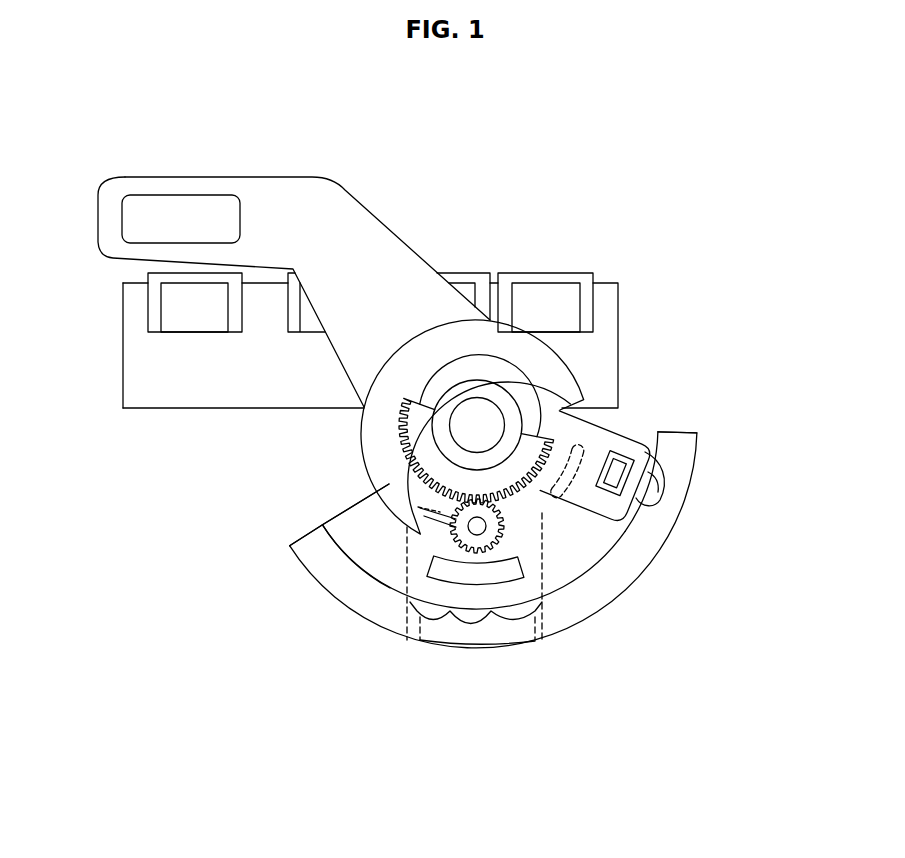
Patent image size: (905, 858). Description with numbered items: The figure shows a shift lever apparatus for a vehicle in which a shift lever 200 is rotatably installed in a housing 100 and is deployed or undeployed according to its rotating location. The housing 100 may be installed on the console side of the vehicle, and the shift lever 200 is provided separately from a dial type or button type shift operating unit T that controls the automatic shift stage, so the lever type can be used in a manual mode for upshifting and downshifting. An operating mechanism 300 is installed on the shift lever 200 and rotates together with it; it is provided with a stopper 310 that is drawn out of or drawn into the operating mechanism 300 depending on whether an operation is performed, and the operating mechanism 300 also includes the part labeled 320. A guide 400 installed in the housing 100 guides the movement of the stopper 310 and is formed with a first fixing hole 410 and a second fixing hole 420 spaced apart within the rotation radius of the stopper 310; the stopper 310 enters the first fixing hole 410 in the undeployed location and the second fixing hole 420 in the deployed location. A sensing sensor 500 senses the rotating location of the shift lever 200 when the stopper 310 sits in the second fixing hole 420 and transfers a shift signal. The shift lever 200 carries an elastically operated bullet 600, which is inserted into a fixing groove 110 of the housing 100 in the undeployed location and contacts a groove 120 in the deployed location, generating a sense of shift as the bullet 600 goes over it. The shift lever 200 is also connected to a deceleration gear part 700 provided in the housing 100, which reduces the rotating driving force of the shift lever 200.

The housing 100 is at (632, 592).
The fixing groove 110 is at (660, 437).
The groove 120 is at (500, 613).
The shift lever 200 is at (287, 168).
The operating mechanism 300 is at (435, 313).
The stopper 310 is at (622, 460).
The handle slot 320 is at (181, 207).
The guide 400 is at (357, 535).
The first fixing hole 410 is at (647, 503).
The second fixing hole 420 is at (527, 565).
The sensing sensor 500 is at (405, 563).
The bullet 600 is at (652, 487).
The deceleration gear part 700 is at (417, 508).
The shift operating unit T is at (153, 398).